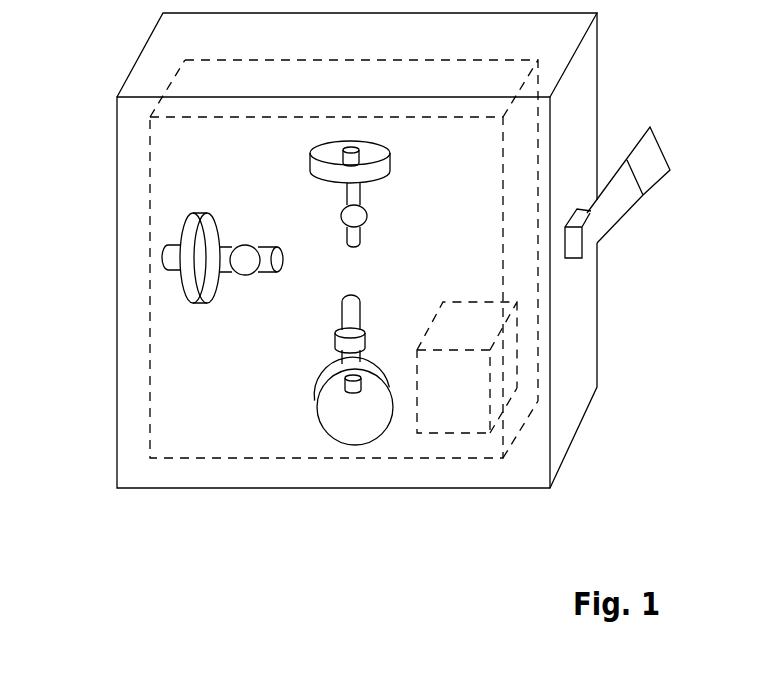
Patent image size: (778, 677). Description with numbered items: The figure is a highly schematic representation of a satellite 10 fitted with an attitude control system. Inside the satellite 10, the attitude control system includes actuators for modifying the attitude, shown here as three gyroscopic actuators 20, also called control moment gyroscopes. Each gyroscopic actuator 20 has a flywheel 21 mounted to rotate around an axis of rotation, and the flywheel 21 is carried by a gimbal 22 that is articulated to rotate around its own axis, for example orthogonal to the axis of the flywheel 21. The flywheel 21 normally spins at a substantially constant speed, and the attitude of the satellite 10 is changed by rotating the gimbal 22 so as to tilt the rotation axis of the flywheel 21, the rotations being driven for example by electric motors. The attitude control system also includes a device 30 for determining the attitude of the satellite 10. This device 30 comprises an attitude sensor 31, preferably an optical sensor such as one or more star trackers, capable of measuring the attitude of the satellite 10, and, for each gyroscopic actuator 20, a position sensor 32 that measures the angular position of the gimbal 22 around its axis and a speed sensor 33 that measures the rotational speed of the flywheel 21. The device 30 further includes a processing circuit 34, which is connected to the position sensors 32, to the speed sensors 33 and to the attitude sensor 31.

The satellite 10 is at (124, 53).
The gyroscopic actuator 20 is at (263, 325).
The flywheel 21 is at (200, 303).
The gimbal 22 is at (228, 248).
The device for determining attitude 30 is at (498, 463).
The attitude sensor 31 is at (638, 204).
The position sensor 32 is at (243, 276).
The speed sensor 33 is at (163, 260).
The processing circuit 34 is at (452, 436).